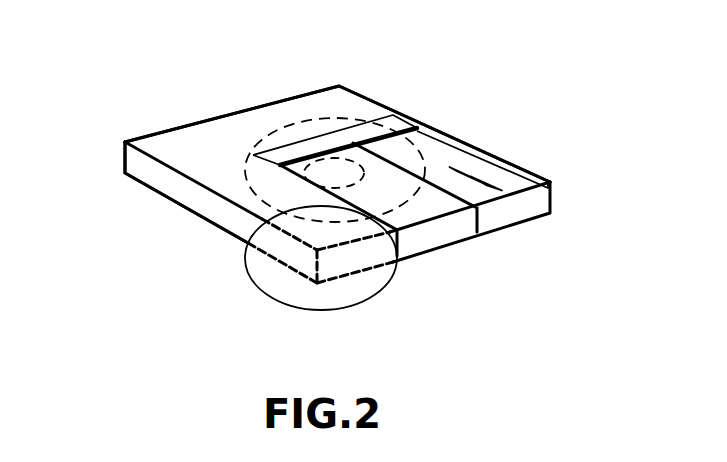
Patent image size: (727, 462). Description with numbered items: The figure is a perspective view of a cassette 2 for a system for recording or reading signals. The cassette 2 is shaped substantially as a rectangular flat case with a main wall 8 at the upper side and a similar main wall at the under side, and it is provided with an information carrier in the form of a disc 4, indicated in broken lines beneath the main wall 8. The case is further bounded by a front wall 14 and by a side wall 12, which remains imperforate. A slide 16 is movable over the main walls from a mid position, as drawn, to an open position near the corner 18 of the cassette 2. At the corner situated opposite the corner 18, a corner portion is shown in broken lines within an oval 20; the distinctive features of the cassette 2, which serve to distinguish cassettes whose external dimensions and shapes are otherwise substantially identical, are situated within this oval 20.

The cassette 2 is at (376, 104).
The disc 4 is at (322, 133).
The main wall 8 is at (210, 136).
The side wall 12 is at (158, 180).
The front wall 14 is at (508, 217).
The slide 16 is at (403, 183).
The corner 18 is at (552, 200).
The oval 20 is at (248, 268).